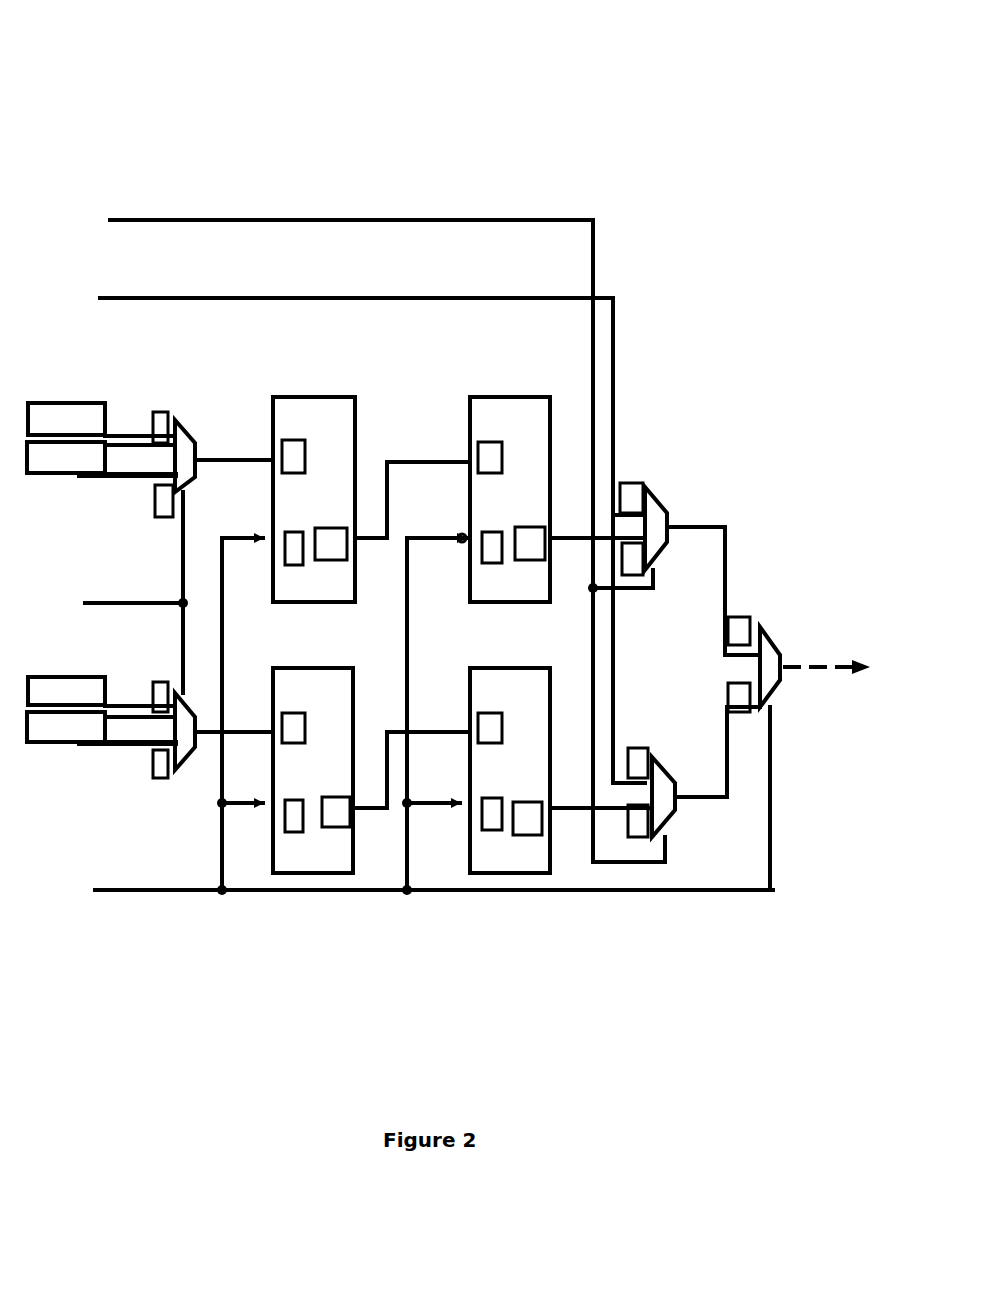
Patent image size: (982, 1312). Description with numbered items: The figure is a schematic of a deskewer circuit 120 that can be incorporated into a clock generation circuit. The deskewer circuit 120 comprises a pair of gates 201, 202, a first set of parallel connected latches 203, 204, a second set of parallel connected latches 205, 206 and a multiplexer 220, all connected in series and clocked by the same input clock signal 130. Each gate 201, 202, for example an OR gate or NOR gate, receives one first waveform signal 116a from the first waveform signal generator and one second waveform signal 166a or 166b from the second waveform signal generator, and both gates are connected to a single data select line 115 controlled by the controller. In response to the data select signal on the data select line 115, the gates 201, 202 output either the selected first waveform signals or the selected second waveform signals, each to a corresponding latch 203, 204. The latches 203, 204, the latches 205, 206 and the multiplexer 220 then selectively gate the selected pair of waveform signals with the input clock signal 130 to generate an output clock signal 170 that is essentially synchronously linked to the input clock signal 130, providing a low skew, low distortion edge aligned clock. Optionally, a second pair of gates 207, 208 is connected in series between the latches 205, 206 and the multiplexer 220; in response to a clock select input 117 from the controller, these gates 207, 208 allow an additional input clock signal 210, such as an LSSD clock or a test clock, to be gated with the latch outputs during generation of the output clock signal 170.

The deskewer circuit 120 is at (78, 66).
The clock select input 117 is at (170, 220).
The additional input clock signal 210 is at (160, 298).
The data select line 115 is at (120, 600).
The input clock signal 130 is at (135, 890).
The second waveform signal 166a is at (96, 436).
The first waveform signal 116a is at (96, 462).
The second waveform signal 166b is at (96, 708).
The gate 201 is at (182, 425).
The gate 202 is at (186, 705).
The latch 203 is at (307, 397).
The latch 204 is at (313, 668).
The latch 205 is at (510, 397).
The latch 206 is at (503, 668).
The gate 207 is at (652, 497).
The gate 208 is at (660, 762).
The multiplexer 220 is at (764, 635).
The output clock signal 170 is at (796, 666).